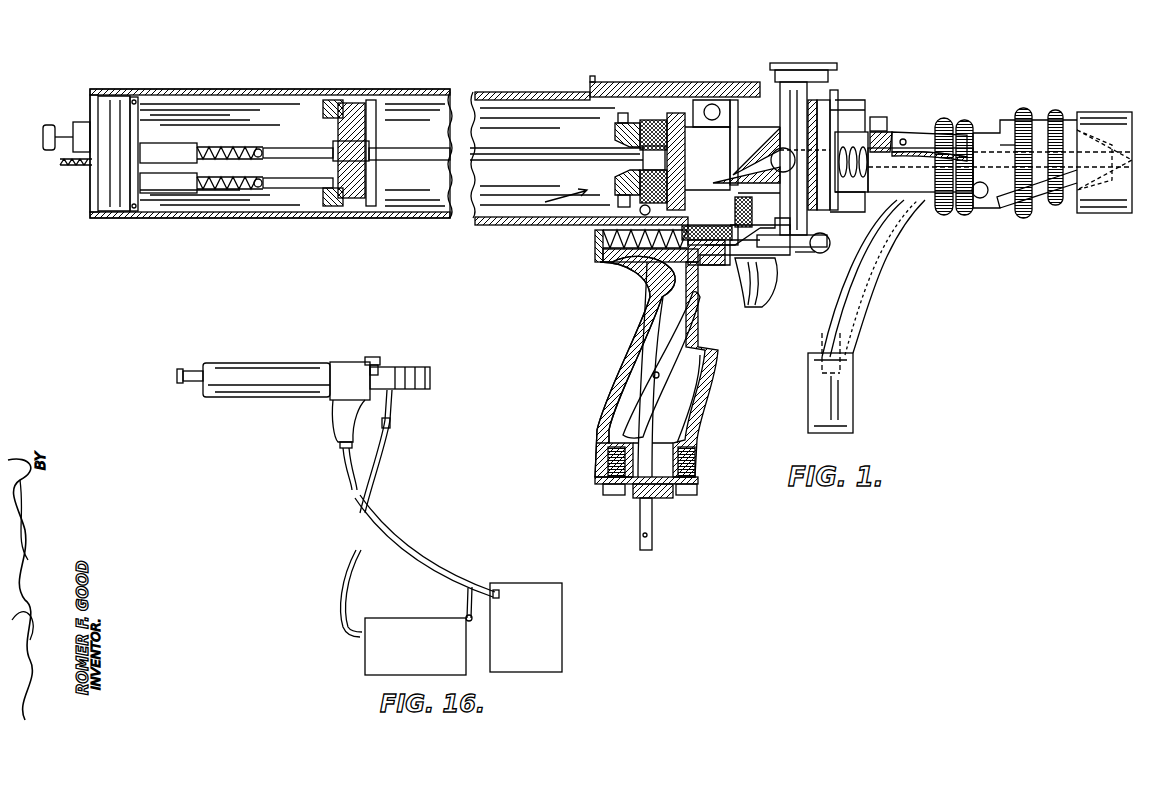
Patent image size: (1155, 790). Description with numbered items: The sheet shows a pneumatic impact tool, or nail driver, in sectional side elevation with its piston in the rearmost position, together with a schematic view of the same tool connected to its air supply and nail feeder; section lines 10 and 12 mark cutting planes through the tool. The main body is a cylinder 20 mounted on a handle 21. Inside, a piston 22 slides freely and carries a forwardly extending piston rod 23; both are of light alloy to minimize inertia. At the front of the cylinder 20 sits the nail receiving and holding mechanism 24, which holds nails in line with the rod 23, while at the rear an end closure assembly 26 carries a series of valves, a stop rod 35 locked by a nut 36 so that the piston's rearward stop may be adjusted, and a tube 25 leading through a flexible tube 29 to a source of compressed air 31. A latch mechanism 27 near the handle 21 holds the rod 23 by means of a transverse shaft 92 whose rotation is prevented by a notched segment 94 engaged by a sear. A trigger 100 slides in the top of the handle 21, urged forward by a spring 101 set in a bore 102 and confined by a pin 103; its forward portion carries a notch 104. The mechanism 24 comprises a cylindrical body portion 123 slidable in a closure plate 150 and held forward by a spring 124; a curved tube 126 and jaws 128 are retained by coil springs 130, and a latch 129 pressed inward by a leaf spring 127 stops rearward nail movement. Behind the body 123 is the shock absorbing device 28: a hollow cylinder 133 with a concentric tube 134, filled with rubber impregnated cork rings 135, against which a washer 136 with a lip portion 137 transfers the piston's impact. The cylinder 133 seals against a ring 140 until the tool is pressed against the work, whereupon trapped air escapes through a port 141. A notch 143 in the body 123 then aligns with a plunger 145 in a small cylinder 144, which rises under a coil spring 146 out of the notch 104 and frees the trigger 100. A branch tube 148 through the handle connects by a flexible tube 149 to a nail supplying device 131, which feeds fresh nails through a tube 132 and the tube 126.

In FIG. 1, the section line 10 is at (797, 44).
In FIG. 1, the section line 12 is at (516, 223).
In FIG. 1, the cylinder 20 is at (450, 92).
In FIG. 16, the cylinder 20 is at (292, 350).
In FIG. 1, the handle 21 is at (613, 360).
In FIG. 1, the piston 22 is at (372, 128).
In FIG. 1, the piston rod 23 is at (525, 158).
In FIG. 1, the nail receiving and holding mechanism 24 is at (948, 90).
In FIG. 1, the tube 25 is at (655, 517).
In FIG. 1, the end closure assembly 26 is at (56, 217).
In FIG. 1, the latch mechanism 27 is at (808, 274).
In FIG. 1, the shock absorbing device 28 is at (556, 202).
In FIG. 16, the flexible tube 29 is at (478, 594).
In FIG. 16, the source of compressed air 31 is at (564, 612).
In FIG. 1, the stop rod 35 is at (60, 160).
In FIG. 1, the nut 36 is at (92, 166).
In FIG. 1, the transverse shaft 92 is at (798, 222).
In FIG. 1, the segment 94 is at (817, 253).
In FIG. 1, the trigger 100 is at (748, 308).
In FIG. 1, the spring 101 is at (696, 248).
In FIG. 1, the bore 102 is at (604, 262).
In FIG. 1, the pin 103 is at (595, 240).
In FIG. 1, the notch 104 is at (690, 266).
In FIG. 1, the cylindrical body portion 123 is at (840, 145).
In FIG. 1, the spring 124 is at (878, 116).
In FIG. 1, the tube 126 is at (858, 300).
In FIG. 1, the leaf spring 127 is at (892, 134).
In FIG. 1, the jaws 128 is at (1100, 120).
In FIG. 1, the latch 129 is at (940, 120).
In FIG. 1, the coil springs 130 is at (1027, 213).
In FIG. 16, the nail supplying device 131 is at (385, 630).
In FIG. 16, the tube 132 is at (356, 568).
In FIG. 1, the hollow cylinder 133 is at (630, 112).
In FIG. 1, the concentric tube 134 is at (618, 140).
In FIG. 1, the rubber impregnated cork rings 135 is at (640, 198).
In FIG. 1, the washer 136 is at (620, 127).
In FIG. 1, the lip portion 137 is at (618, 182).
In FIG. 1, the ring 140 is at (698, 98).
In FIG. 1, the port 141 is at (716, 105).
In FIG. 1, the notch 143 is at (770, 160).
In FIG. 1, the small cylinder 144 is at (775, 240).
In FIG. 1, the plunger 145 is at (740, 152).
In FIG. 1, the coil spring 146 is at (735, 205).
In FIG. 1, the branch tube 148 is at (653, 540).
In FIG. 16, the flexible tube 149 is at (467, 605).
In FIG. 1, the closure plate 150 is at (848, 100).